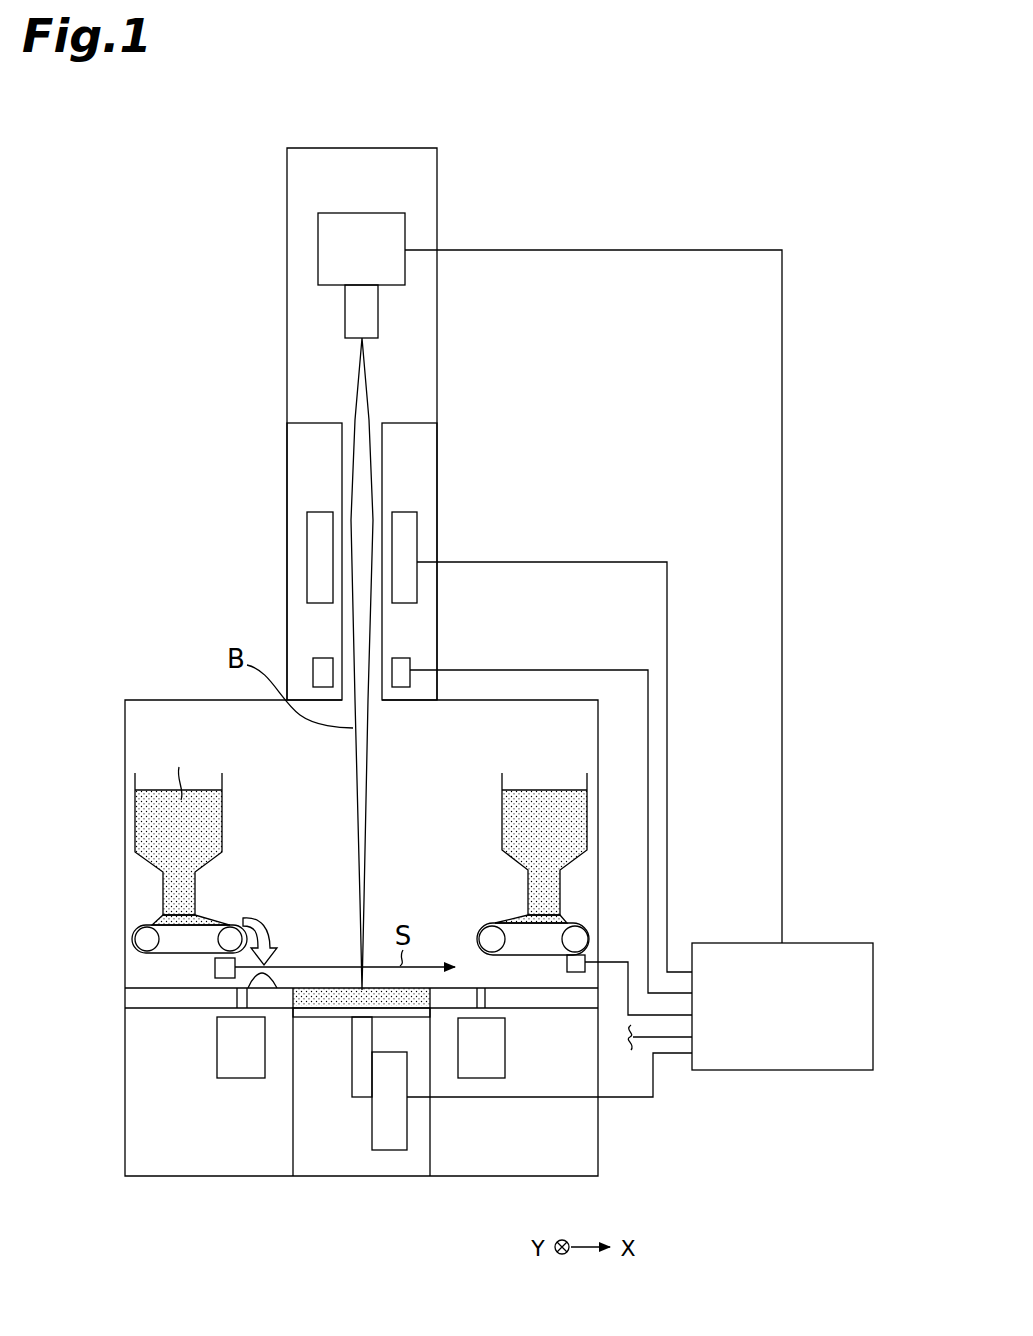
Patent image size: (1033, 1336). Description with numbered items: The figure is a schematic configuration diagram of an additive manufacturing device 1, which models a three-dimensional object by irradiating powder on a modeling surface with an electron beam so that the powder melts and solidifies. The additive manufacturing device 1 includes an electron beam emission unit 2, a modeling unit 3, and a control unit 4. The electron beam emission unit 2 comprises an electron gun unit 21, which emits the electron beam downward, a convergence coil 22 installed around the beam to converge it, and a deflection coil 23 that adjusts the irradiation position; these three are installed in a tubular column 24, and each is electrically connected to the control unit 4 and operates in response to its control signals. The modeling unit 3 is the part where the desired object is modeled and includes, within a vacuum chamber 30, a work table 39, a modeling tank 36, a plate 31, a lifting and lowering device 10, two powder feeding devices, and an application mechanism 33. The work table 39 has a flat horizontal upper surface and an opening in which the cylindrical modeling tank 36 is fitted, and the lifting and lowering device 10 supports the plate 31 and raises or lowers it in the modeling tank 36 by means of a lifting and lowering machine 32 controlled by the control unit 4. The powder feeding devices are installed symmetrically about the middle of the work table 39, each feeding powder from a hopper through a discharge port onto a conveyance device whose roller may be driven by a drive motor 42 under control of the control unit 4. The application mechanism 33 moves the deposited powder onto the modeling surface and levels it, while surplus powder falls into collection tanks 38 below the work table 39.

The additive manufacturing device 1 is at (714, 124).
The electron beam emission unit 2 is at (287, 166).
The electron gun unit 21 is at (318, 240).
The convergence coil 22 is at (417, 523).
The deflection coil 23 is at (410, 664).
The tubular column 24 is at (287, 204).
The modeling unit 3 is at (125, 720).
The chamber 30 is at (161, 851).
The plate 31 is at (318, 1018).
The lifting and lowering machine 32 is at (408, 1130).
The application mechanism 33 is at (215, 967).
The modeling tank 36 is at (293, 1029).
The collection tank 38 is at (217, 1063).
The work table 39 is at (500, 987).
The drive motor 42 is at (576, 975).
The control unit 4 is at (819, 943).
The lifting and lowering device 10 is at (346, 1124).